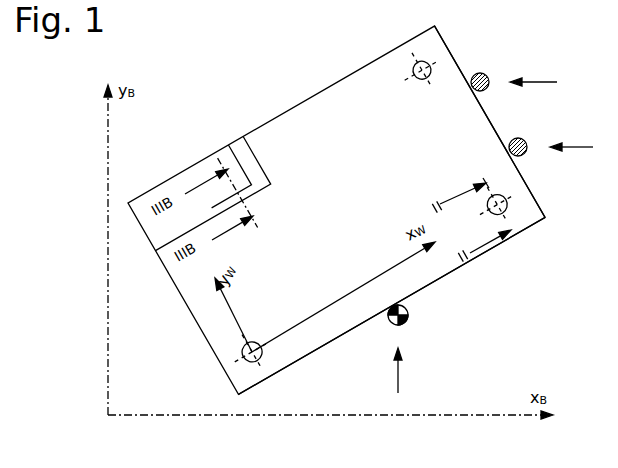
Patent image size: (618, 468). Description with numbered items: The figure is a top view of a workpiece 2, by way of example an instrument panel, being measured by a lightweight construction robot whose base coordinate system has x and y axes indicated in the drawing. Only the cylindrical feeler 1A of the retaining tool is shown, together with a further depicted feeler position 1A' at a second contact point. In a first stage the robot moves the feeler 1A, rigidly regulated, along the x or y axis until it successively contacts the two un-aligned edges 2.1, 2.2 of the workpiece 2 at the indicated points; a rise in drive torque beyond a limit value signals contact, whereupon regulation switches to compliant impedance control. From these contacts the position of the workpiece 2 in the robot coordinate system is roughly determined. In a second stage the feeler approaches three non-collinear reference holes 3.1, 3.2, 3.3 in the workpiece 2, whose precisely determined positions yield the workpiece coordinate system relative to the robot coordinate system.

The workpiece 2 is at (288, 130).
The edge of the workpiece 2.1 is at (440, 282).
The edge of the workpiece 2.2 is at (530, 184).
The reference hole 3.1 is at (258, 342).
The reference hole 3.2 is at (508, 212).
The reference hole 3.3 is at (422, 80).
The feeler 1A is at (424, 325).
The stop element 1A' is at (511, 67).